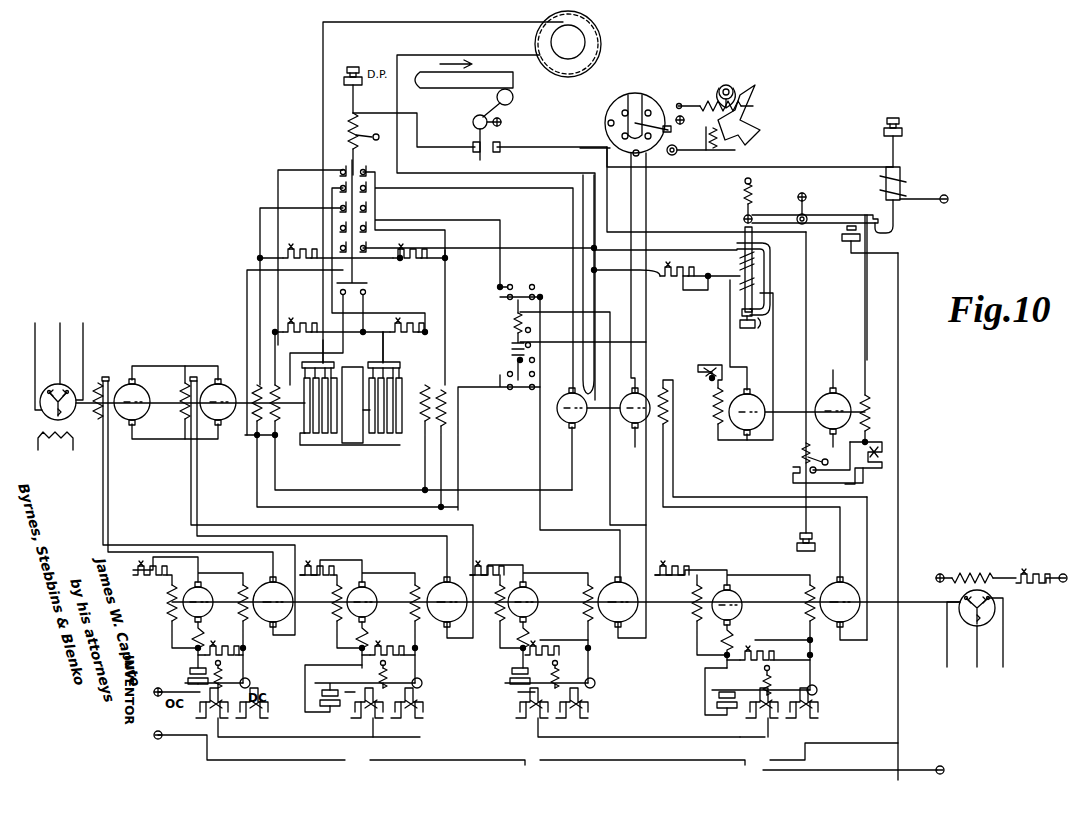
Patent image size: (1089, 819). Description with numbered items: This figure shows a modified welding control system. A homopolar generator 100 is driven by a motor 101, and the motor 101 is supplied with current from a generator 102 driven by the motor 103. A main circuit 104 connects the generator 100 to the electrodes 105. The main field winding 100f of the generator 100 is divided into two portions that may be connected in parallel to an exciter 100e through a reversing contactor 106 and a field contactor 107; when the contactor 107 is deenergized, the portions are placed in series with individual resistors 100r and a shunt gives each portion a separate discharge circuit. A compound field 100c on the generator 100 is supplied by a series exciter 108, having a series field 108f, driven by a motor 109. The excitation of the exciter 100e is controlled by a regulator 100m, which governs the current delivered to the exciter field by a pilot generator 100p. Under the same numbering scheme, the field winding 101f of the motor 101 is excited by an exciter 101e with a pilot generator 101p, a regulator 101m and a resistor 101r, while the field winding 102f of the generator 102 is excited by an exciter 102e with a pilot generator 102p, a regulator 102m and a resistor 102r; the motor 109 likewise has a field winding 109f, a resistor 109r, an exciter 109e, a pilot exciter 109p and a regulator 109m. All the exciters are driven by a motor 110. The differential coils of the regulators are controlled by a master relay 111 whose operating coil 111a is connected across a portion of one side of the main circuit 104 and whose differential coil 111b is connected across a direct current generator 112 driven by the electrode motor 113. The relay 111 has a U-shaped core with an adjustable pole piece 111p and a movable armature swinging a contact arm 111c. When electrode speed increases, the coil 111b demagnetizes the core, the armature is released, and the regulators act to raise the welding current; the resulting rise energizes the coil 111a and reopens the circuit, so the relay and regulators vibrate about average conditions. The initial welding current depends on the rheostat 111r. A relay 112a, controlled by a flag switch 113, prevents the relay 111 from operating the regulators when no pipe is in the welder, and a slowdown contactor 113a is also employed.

The homopolar generator 100 is at (332, 432).
The compound field 100c is at (420, 425).
The main field winding 100f is at (257, 385).
The individual resistors 100r is at (298, 257).
The pilot generator 100p is at (530, 600).
The exciter 100e is at (608, 585).
The regulator 100m is at (572, 714).
The motor 101 is at (225, 432).
The field winding of motor 101f is at (183, 383).
The exciter 101e is at (331, 507).
The pilot generator 101p is at (370, 590).
The resistor 101r is at (400, 652).
The regulator 101m is at (402, 718).
The generator 102 is at (140, 432).
The field winding of generator 102f is at (98, 383).
The exciter 102e is at (283, 580).
The pilot generator 102p is at (205, 590).
The resistor 102r is at (232, 652).
The regulator 102m is at (237, 718).
The motor 103 is at (50, 385).
The main circuit 104 is at (548, 173).
The electrodes 105 is at (600, 42).
The reversing contactor 106 is at (512, 334).
The field contactor 107 is at (365, 202).
The series exciter 108 is at (580, 424).
The series field 108f is at (592, 388).
The motor 109 is at (635, 427).
The field winding of motor 109f is at (668, 412).
The pilot exciter 109p is at (735, 600).
The exciter 109e is at (832, 625).
The resistor 109r is at (761, 677).
The regulator 109m is at (798, 709).
The motor 110 is at (965, 624).
The master relay 111 is at (700, 271).
The operating coil 111a is at (742, 262).
The differential coil 111b is at (742, 285).
The contact arm 111c is at (840, 207).
The adjustable pole piece 111p is at (754, 327).
The rheostat 111r is at (693, 282).
The direct current generator 112 is at (747, 432).
The relay 112a is at (903, 185).
The motor 113 is at (495, 97).
The slowdown contactor 113a is at (795, 460).